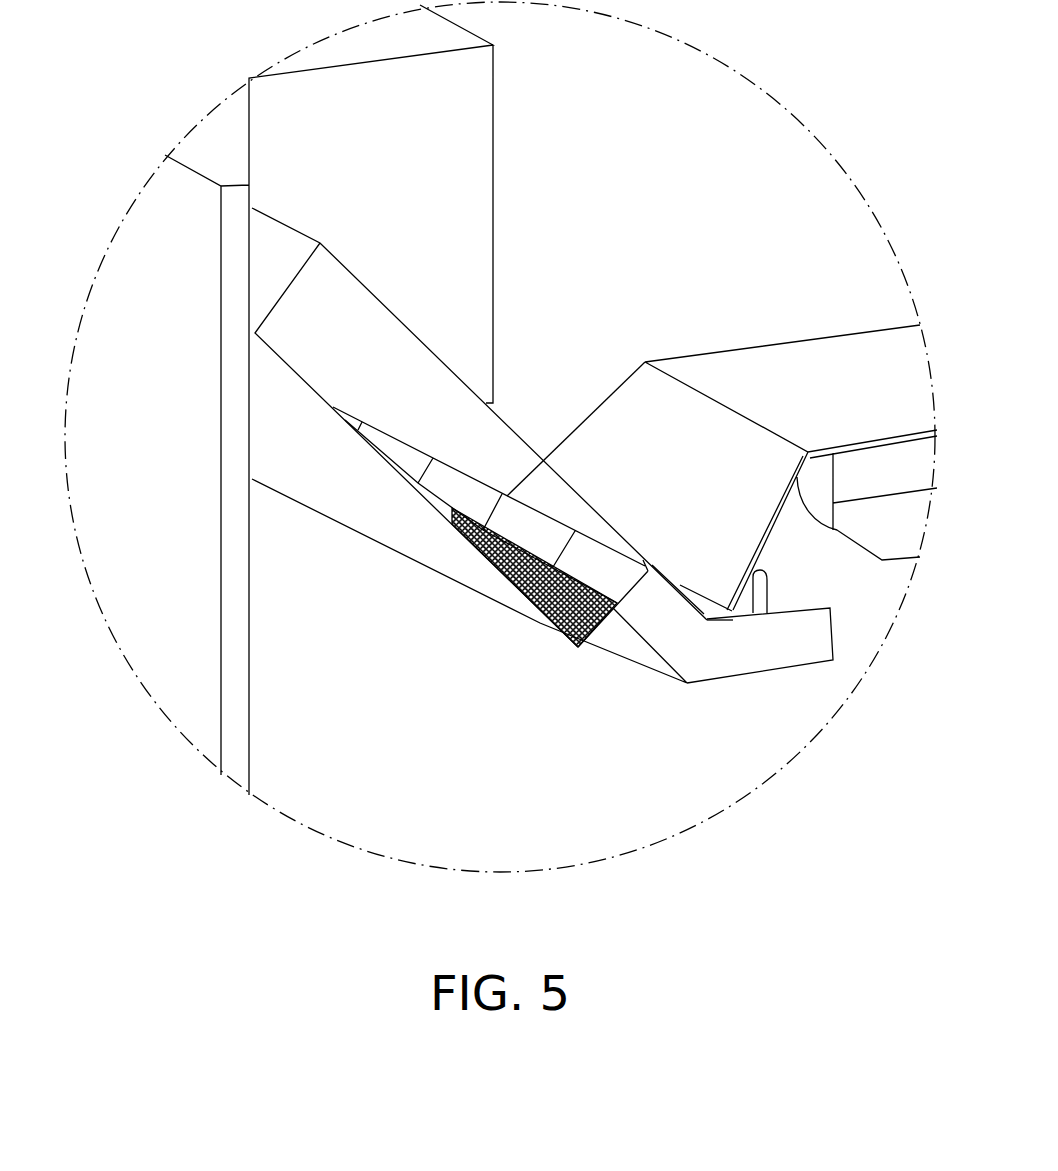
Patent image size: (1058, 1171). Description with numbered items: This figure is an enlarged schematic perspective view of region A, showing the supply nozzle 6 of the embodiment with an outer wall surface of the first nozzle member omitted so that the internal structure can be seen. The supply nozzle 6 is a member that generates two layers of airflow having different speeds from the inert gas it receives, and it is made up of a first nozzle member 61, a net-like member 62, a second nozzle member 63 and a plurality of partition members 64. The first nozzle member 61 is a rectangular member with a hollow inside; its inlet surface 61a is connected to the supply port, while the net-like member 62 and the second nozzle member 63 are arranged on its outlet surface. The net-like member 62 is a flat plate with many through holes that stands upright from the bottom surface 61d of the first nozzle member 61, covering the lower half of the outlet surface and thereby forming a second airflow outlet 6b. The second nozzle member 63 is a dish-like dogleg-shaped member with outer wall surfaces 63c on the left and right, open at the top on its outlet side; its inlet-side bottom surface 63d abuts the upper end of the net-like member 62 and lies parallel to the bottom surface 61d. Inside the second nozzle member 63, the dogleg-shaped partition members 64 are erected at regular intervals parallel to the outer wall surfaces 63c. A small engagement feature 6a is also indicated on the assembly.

The supply nozzle 6 is at (594, 495).
The engagement protrusion 6a is at (785, 597).
The second airflow outlet 6b is at (590, 654).
The first nozzle member 61 is at (479, 445).
The inlet surface 61a is at (277, 275).
The bottom surface 61d is at (420, 550).
The net-like member 62 is at (573, 648).
The second nozzle member 63 is at (768, 549).
The outer wall surfaces 63c is at (760, 645).
The bottom surface 63d is at (610, 632).
The partition members 64 is at (603, 573).
The region A is at (858, 683).